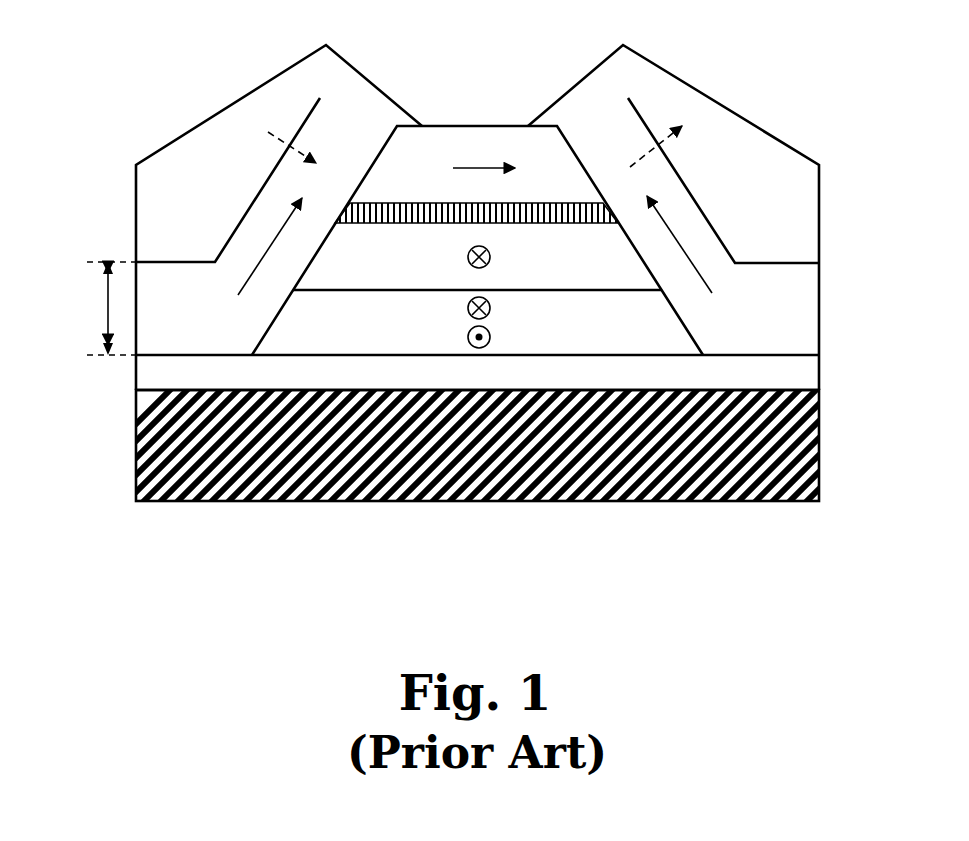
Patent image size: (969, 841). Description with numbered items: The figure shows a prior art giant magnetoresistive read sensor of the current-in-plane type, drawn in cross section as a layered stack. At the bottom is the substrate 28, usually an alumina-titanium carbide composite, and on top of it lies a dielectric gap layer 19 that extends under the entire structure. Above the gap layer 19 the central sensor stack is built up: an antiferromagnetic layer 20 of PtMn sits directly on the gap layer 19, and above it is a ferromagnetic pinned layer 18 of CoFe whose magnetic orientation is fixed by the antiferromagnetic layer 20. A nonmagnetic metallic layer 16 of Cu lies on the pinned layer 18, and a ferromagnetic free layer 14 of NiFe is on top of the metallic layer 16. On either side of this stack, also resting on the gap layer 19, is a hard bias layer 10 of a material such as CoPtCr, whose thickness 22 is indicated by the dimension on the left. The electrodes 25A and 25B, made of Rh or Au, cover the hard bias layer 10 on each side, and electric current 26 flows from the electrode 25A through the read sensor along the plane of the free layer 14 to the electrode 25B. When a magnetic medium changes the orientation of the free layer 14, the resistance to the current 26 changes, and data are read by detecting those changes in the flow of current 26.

The hard bias layer 10 is at (477, 211).
The ferromagnetic free layer 14 is at (477, 240).
The nonmagnetic metallic layer 16 is at (557, 217).
The ferromagnetic pinned layer 18 is at (477, 268).
The dielectric gap layer 19 is at (795, 365).
The antiferromagnetic layer 20 is at (427, 322).
The thickness 22 is at (107, 306).
The electrode 25A is at (162, 153).
The electrode 25B is at (775, 138).
The electric current 26 is at (268, 130).
The substrate 28 is at (357, 502).